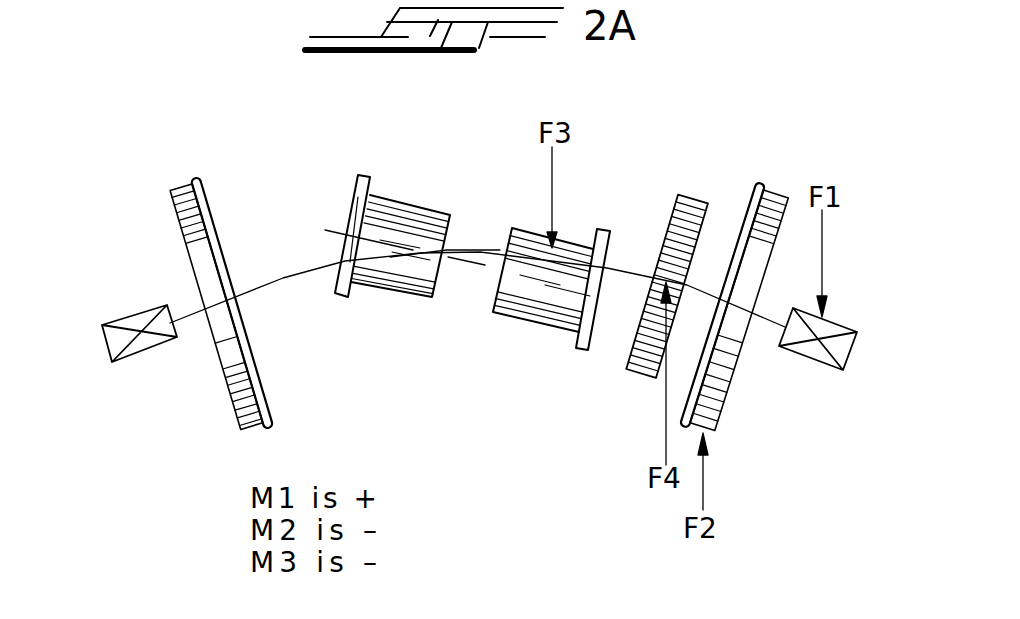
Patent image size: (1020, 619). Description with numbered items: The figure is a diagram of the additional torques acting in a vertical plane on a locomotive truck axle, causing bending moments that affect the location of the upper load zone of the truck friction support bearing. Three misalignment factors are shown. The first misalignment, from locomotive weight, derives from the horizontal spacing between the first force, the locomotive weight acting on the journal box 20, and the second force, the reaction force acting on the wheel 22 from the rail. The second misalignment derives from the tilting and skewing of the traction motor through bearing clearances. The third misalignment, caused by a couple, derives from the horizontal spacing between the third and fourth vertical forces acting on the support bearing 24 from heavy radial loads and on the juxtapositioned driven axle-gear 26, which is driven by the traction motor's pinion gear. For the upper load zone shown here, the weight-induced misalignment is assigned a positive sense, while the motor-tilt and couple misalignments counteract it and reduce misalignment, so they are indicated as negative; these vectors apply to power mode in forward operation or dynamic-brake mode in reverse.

The journal box 20 is at (857, 332).
The wheel 22 is at (733, 368).
The support bearing 24 is at (532, 323).
The driven axle-gear 26 is at (637, 377).